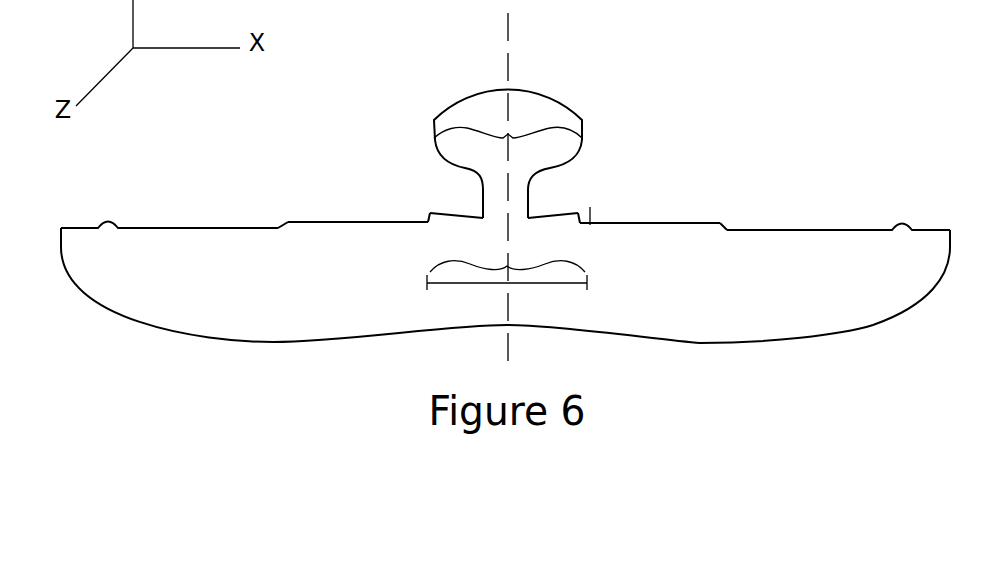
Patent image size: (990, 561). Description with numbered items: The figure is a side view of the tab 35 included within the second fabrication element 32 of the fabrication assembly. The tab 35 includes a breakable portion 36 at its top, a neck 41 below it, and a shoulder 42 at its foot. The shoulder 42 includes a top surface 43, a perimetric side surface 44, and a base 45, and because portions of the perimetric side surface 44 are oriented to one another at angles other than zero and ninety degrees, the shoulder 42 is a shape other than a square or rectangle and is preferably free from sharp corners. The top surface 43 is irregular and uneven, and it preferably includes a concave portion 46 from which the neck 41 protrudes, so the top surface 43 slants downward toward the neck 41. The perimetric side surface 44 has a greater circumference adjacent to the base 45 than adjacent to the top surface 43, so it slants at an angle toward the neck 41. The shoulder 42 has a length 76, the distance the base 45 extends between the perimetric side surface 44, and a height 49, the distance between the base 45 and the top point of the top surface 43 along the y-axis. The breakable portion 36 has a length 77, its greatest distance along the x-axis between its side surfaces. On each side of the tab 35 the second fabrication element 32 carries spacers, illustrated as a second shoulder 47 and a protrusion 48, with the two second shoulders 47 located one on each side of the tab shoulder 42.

The second fabrication element 32 is at (873, 325).
The tab 35 is at (535, 82).
The breakable portion 36 is at (565, 110).
The length 77 is at (508, 124).
The neck 41 is at (540, 182).
The shoulder 42 is at (573, 213).
The top surface 43 is at (450, 212).
The perimetric side surface 44 is at (428, 213).
The base 45 is at (443, 224).
The concave portion 46 is at (545, 212).
The second shoulder 47 is at (293, 213).
The protrusion 48 is at (100, 224).
The height 49 is at (590, 210).
The length 76 is at (507, 263).